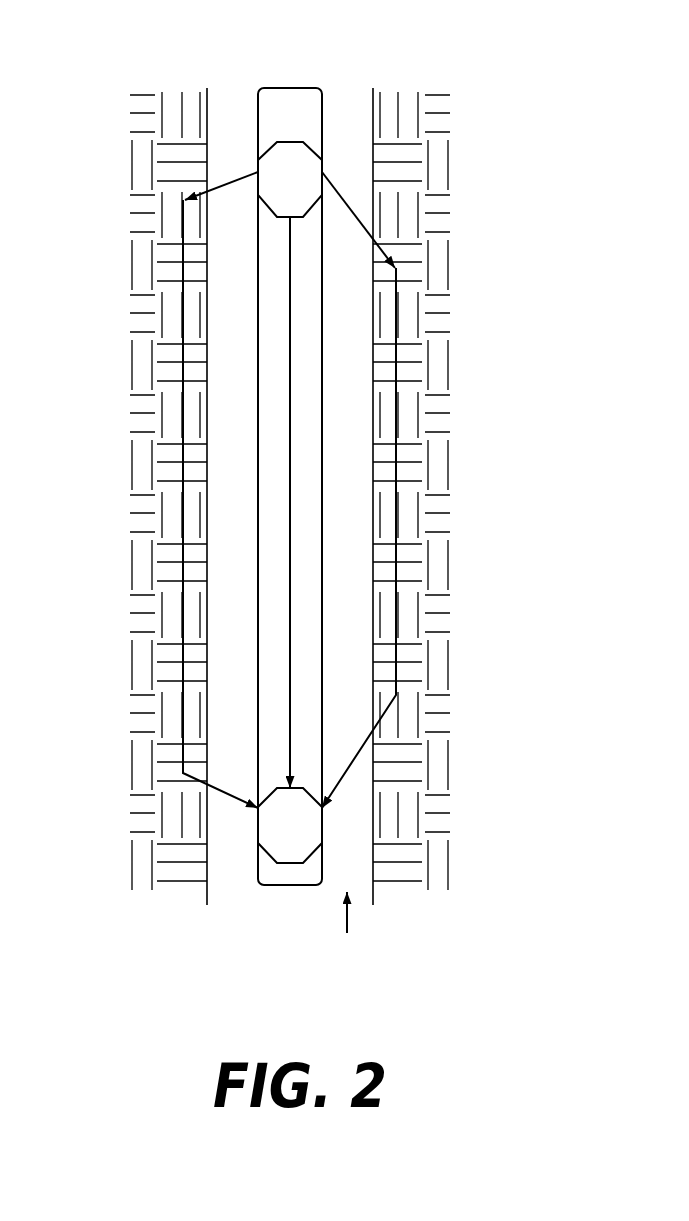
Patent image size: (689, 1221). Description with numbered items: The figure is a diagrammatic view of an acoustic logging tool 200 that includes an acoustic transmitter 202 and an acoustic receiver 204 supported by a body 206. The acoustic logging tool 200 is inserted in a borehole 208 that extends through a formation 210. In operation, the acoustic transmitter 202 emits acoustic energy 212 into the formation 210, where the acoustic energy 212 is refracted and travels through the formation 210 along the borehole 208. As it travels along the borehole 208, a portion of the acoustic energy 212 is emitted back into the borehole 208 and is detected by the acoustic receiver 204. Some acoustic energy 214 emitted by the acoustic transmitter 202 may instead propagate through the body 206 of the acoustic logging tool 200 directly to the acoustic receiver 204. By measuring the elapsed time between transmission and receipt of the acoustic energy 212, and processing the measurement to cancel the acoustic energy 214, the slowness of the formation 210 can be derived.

The acoustic logging tool 200 is at (296, 481).
The acoustic transmitter 202 is at (300, 153).
The acoustic receiver 204 is at (275, 848).
The body 206 is at (258, 88).
The borehole 208 is at (349, 927).
The formation 210 is at (155, 475).
The acoustic energy 212 is at (183, 275).
The acoustic energy 214 is at (290, 495).